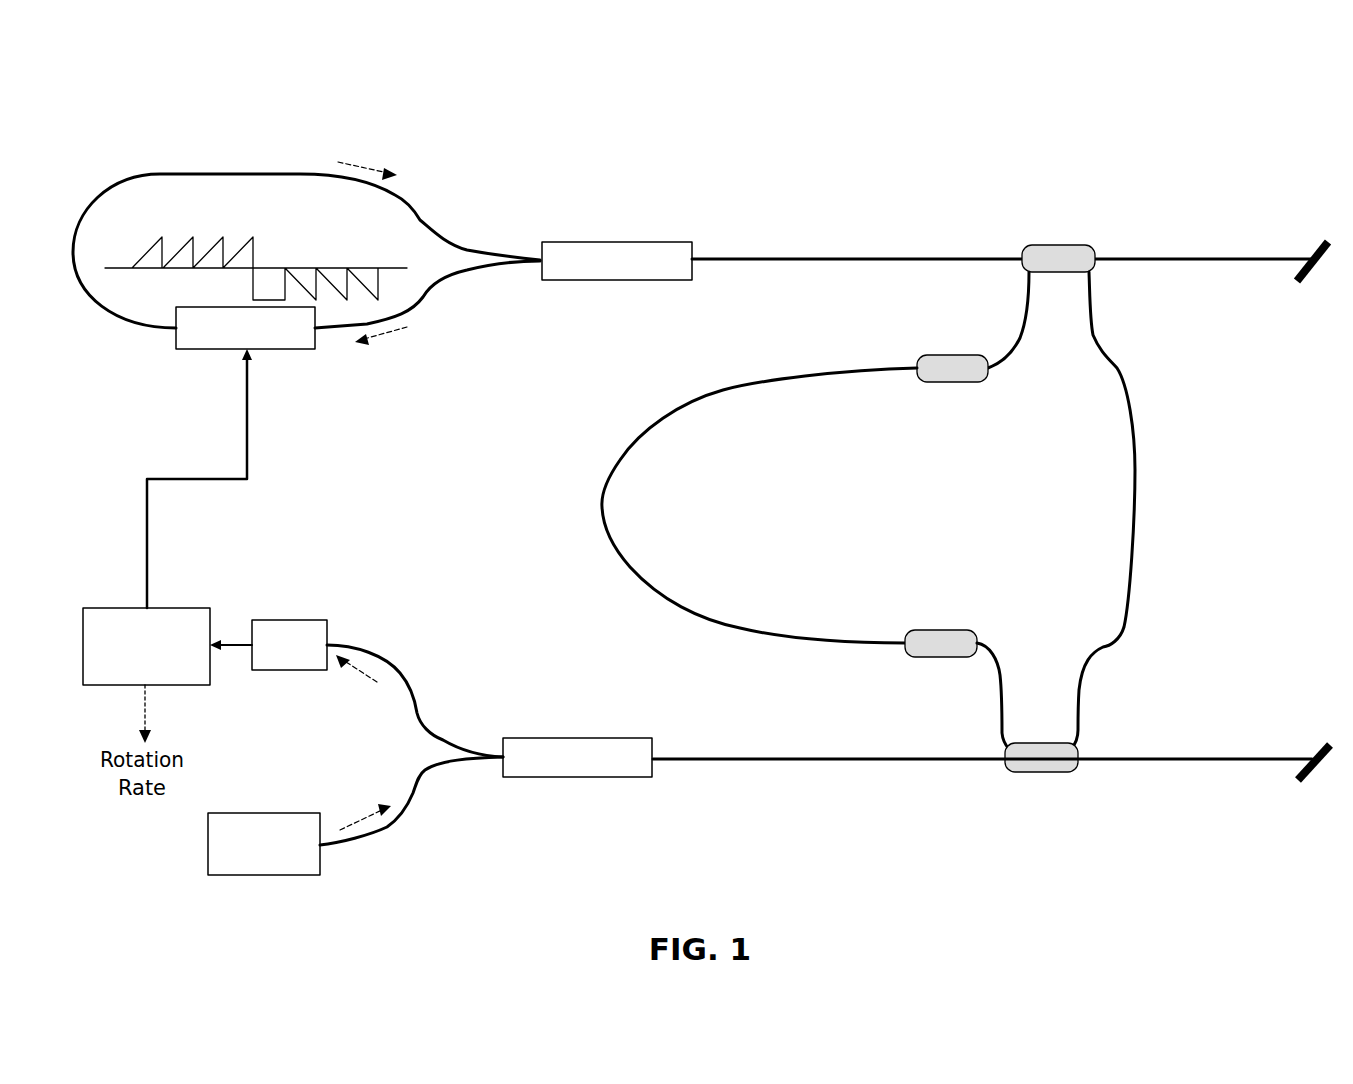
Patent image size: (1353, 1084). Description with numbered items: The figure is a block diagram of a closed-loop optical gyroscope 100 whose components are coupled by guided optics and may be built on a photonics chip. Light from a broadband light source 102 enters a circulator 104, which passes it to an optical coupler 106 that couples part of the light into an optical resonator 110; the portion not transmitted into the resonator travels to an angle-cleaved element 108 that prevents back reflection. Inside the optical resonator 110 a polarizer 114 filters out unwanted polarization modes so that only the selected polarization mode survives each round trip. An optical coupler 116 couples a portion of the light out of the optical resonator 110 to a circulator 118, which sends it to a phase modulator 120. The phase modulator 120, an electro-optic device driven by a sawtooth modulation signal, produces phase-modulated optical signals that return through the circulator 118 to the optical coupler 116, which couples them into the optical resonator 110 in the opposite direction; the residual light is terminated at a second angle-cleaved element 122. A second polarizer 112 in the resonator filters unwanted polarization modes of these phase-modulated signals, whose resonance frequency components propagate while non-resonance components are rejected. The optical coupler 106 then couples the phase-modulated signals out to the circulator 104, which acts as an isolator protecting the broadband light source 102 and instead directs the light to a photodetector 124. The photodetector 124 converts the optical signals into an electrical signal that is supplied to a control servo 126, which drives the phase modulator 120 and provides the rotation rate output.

The optical gyroscope 100 is at (500, 98).
The broadband light source 102 is at (278, 812).
The circulator 104 is at (583, 738).
The optical coupler 106 is at (1060, 778).
The angle-cleaved element 108 is at (1300, 783).
The optical resonator 110 is at (841, 519).
The polarizer 112 is at (950, 630).
The polarizer 114 is at (967, 385).
The optical coupler 116 is at (1070, 245).
The circulator 118 is at (630, 242).
The phase modulator 120 is at (220, 350).
The angle-cleaved element 122 is at (1297, 280).
The photodetector 124 is at (297, 620).
The control servo 126 is at (183, 606).